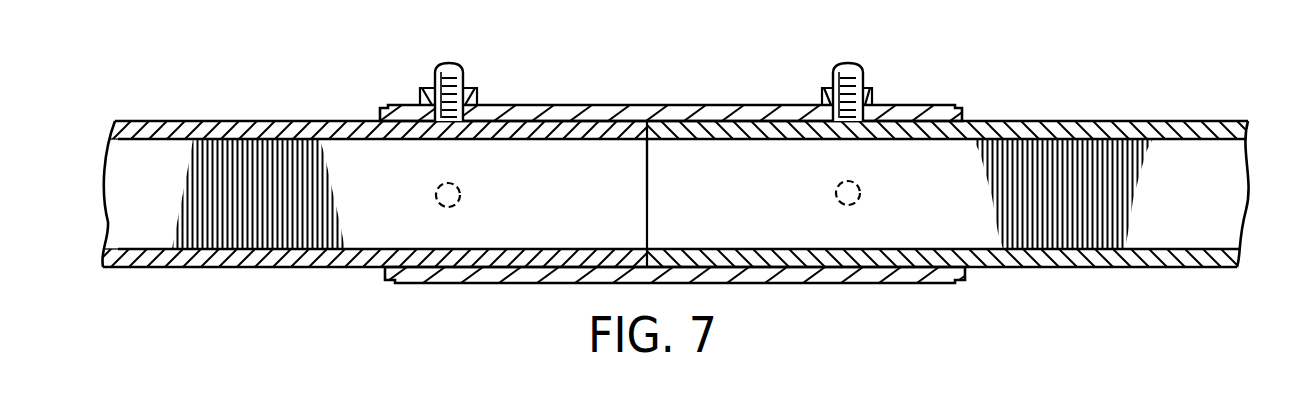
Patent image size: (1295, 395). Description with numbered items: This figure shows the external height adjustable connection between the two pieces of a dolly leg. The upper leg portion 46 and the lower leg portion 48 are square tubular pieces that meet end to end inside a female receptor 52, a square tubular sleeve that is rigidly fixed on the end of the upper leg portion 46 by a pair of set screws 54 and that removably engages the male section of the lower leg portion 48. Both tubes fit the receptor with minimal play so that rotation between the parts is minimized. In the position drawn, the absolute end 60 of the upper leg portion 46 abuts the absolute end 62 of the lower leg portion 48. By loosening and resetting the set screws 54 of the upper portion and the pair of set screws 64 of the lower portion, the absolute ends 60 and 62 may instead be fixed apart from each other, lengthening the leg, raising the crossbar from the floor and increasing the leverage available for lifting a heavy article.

The upper leg portion 46 is at (1197, 268).
The lower leg portion 48 is at (188, 121).
The female receptor 52 is at (700, 104).
The set screws 54 is at (851, 62).
The absolute end of the upper leg portion 60 is at (647, 183).
The absolute end of the lower leg portion 62 is at (650, 215).
The set screws 64 is at (446, 62).